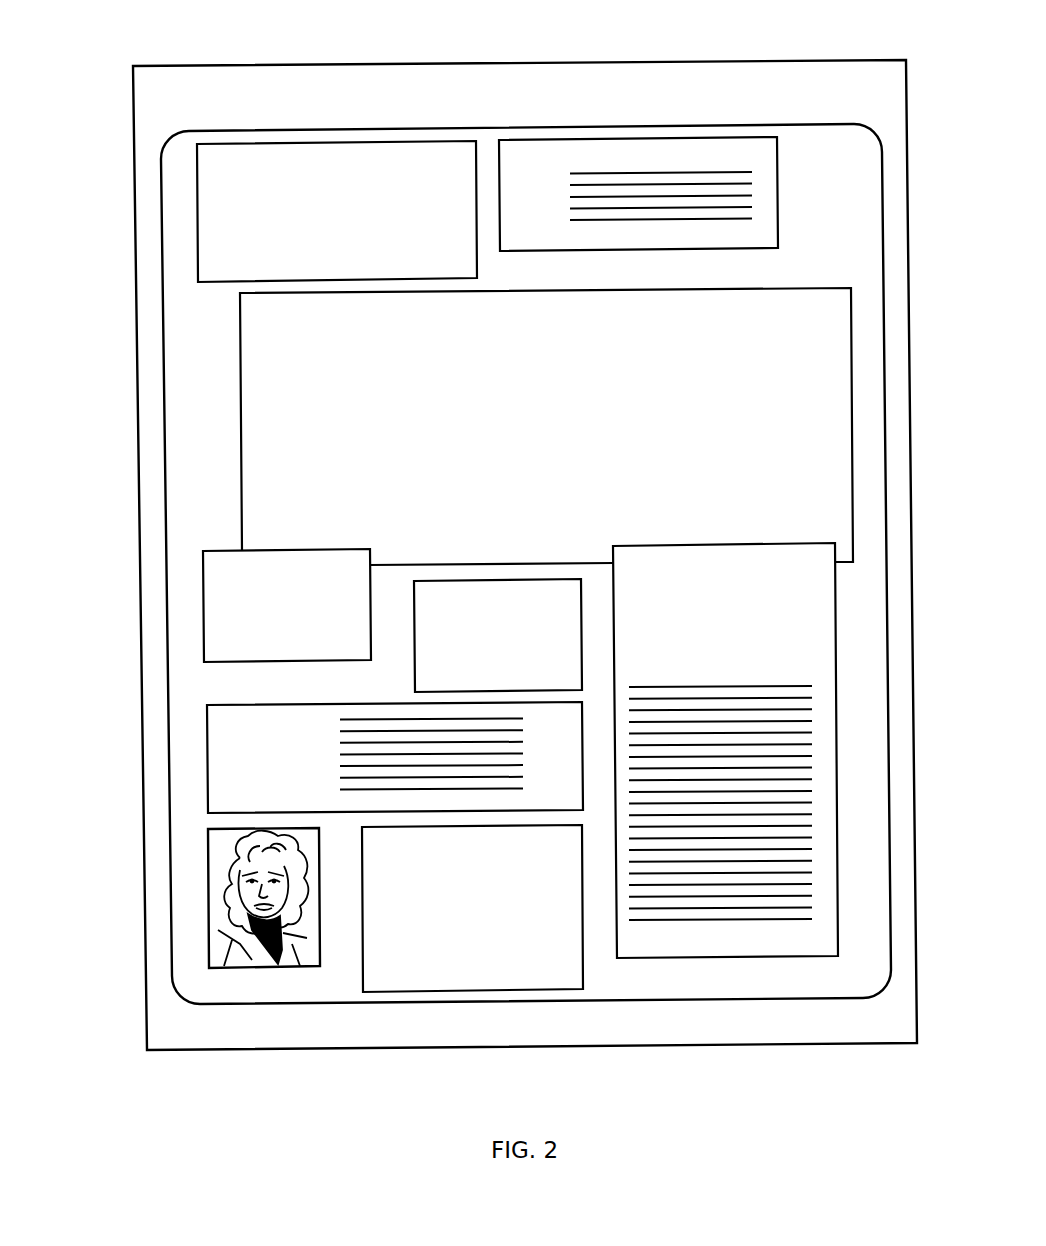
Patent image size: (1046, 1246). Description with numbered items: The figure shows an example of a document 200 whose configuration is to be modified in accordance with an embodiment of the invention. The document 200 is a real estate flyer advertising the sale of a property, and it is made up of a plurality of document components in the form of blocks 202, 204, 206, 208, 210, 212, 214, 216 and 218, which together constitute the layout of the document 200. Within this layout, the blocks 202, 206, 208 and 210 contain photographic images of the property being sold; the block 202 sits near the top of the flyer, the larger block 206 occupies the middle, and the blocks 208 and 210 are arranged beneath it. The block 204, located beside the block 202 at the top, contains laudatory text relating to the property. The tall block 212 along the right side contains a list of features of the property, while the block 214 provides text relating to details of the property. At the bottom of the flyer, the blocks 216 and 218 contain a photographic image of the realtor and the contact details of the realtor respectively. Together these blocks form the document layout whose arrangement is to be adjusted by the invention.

The document 200 is at (601, 55).
The block 202 is at (253, 178).
The block 204 is at (557, 174).
The block 206 is at (295, 334).
The block 208 is at (257, 587).
The block 210 is at (465, 616).
The block 212 is at (672, 592).
The block 214 is at (261, 742).
The block 216 is at (198, 878).
The block 218 is at (407, 852).